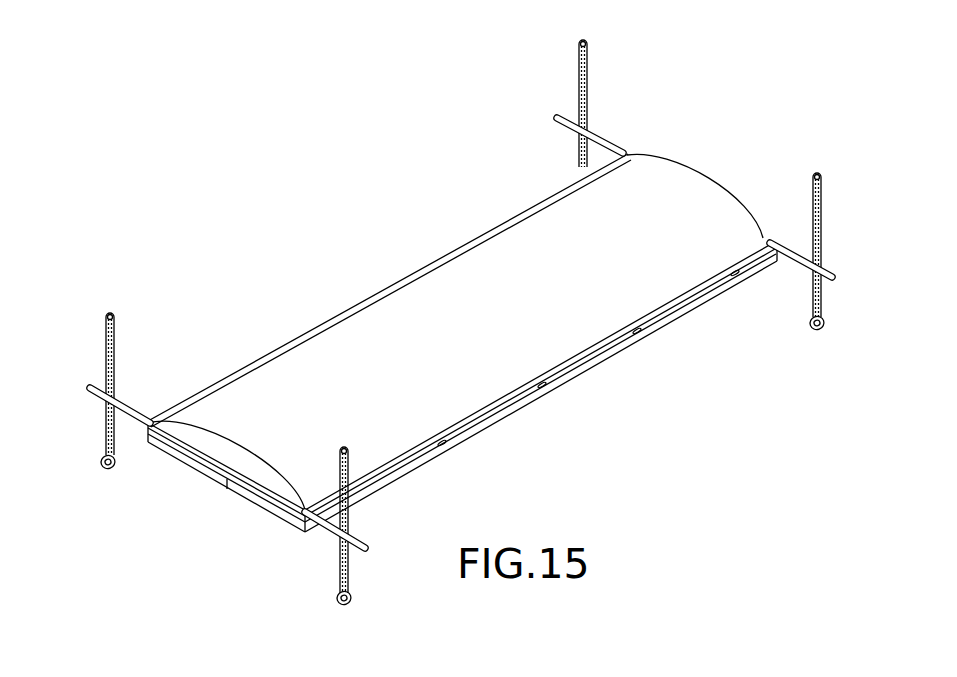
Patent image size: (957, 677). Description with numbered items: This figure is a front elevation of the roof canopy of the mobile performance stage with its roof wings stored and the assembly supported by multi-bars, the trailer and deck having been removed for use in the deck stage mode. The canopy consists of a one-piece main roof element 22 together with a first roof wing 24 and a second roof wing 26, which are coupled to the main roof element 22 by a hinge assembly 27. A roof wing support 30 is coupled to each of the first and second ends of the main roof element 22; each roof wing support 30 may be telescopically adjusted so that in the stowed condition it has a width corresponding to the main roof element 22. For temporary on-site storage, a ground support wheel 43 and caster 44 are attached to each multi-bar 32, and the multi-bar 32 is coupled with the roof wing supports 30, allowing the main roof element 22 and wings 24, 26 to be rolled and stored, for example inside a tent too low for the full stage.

The main roof element 22 is at (498, 237).
The first roof wing 24 is at (255, 502).
The second roof wing 26 is at (208, 478).
The hinge assembly 27 is at (637, 330).
The roof wing support 30 is at (603, 142).
The multi-bar 32 is at (580, 82).
The ground support wheel 43 is at (807, 323).
The caster 44 is at (825, 320).